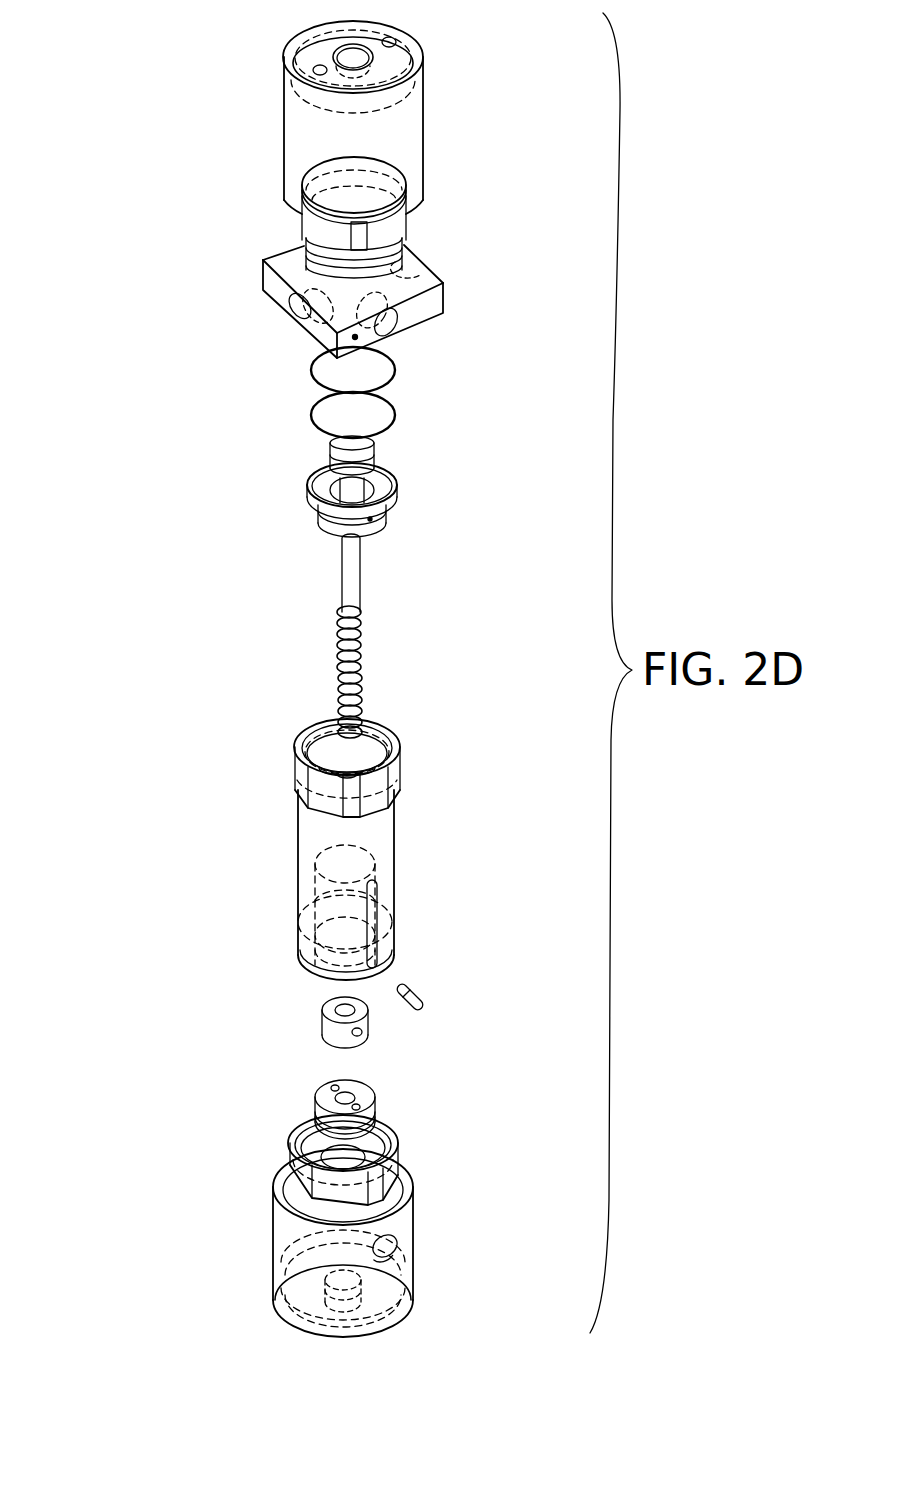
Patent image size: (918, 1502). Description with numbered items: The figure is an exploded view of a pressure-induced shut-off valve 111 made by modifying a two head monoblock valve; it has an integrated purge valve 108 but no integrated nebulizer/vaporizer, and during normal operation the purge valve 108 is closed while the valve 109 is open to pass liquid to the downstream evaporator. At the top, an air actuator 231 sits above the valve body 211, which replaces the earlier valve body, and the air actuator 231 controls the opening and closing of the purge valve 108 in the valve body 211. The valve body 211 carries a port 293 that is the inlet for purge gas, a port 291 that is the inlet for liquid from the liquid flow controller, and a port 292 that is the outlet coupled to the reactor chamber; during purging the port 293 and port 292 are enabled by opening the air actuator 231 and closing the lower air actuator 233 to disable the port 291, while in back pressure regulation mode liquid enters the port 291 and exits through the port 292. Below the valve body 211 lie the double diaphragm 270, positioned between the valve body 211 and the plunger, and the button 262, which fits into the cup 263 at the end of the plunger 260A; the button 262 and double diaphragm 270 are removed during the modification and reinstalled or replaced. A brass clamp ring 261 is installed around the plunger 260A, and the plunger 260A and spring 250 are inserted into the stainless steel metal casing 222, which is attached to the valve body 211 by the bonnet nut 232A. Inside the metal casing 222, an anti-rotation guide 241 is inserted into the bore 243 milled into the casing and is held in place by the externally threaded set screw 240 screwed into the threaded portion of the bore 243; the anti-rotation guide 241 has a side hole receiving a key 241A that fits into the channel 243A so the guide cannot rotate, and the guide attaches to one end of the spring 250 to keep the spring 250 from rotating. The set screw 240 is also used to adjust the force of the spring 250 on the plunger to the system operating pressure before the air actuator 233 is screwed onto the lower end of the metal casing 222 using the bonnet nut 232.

The pressure-induced shut-off valve 111 is at (130, 171).
The air actuator 231 is at (424, 135).
The purge valve 108 is at (498, 170).
The port 293 is at (413, 263).
The valve body 211 is at (285, 262).
The port 291 is at (289, 310).
The port 292 is at (387, 333).
The double diaphragm 270 is at (305, 371).
The button 262 is at (351, 452).
The plunger 260A is at (354, 487).
The brass clamp ring 261 is at (395, 488).
The cup 263 is at (316, 510).
The spring 250 is at (359, 667).
The bonnet nut 232A is at (402, 774).
The metal casing 222 is at (298, 850).
The valve 109 is at (497, 836).
The bore 243 is at (318, 888).
The channel 243A is at (378, 907).
The key 241A is at (424, 996).
The anti-rotation guide 241 is at (368, 1023).
The externally threaded set screw 240 is at (325, 1098).
The bonnet nut 232 is at (400, 1160).
The air actuator 233 is at (412, 1227).